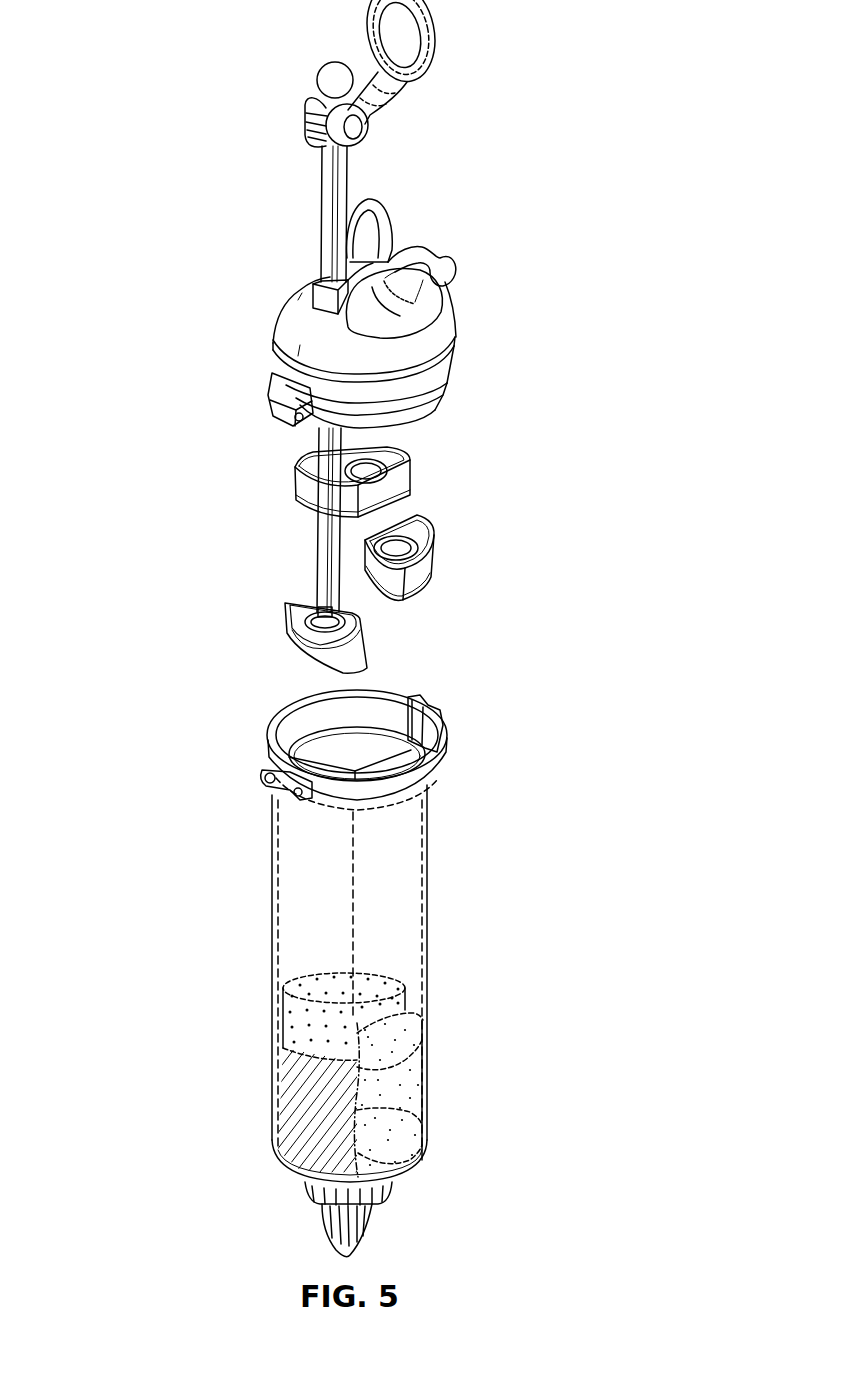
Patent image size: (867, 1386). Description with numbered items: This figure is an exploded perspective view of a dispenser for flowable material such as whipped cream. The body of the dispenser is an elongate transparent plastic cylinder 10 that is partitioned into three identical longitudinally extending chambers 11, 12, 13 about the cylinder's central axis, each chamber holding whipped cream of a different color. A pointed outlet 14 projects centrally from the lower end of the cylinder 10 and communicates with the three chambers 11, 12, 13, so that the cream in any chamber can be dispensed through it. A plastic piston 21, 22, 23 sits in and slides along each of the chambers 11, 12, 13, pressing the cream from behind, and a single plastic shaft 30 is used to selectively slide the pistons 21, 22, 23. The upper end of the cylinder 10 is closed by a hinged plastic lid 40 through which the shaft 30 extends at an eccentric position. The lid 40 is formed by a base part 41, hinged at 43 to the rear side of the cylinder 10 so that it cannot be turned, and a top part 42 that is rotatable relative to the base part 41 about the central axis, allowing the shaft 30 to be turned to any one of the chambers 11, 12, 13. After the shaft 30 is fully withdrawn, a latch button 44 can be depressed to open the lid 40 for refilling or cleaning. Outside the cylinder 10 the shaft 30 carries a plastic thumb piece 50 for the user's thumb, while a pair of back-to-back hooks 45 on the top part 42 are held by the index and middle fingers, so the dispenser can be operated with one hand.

The cylinder 10 is at (358, 947).
The chamber 11 is at (352, 747).
The chamber 12 is at (398, 762).
The chamber 13 is at (305, 770).
The pointed outlet 14 is at (356, 1238).
The piston 21 is at (397, 482).
The piston 22 is at (413, 570).
The piston 23 is at (293, 633).
The shaft 30 is at (330, 206).
The lid 40 is at (412, 328).
The base part 41 is at (433, 370).
The top part 42 is at (430, 310).
The hinge 43 is at (283, 408).
The latch button 44 is at (457, 312).
The hooks 45 is at (375, 223).
The thumb piece 50 is at (456, 32).